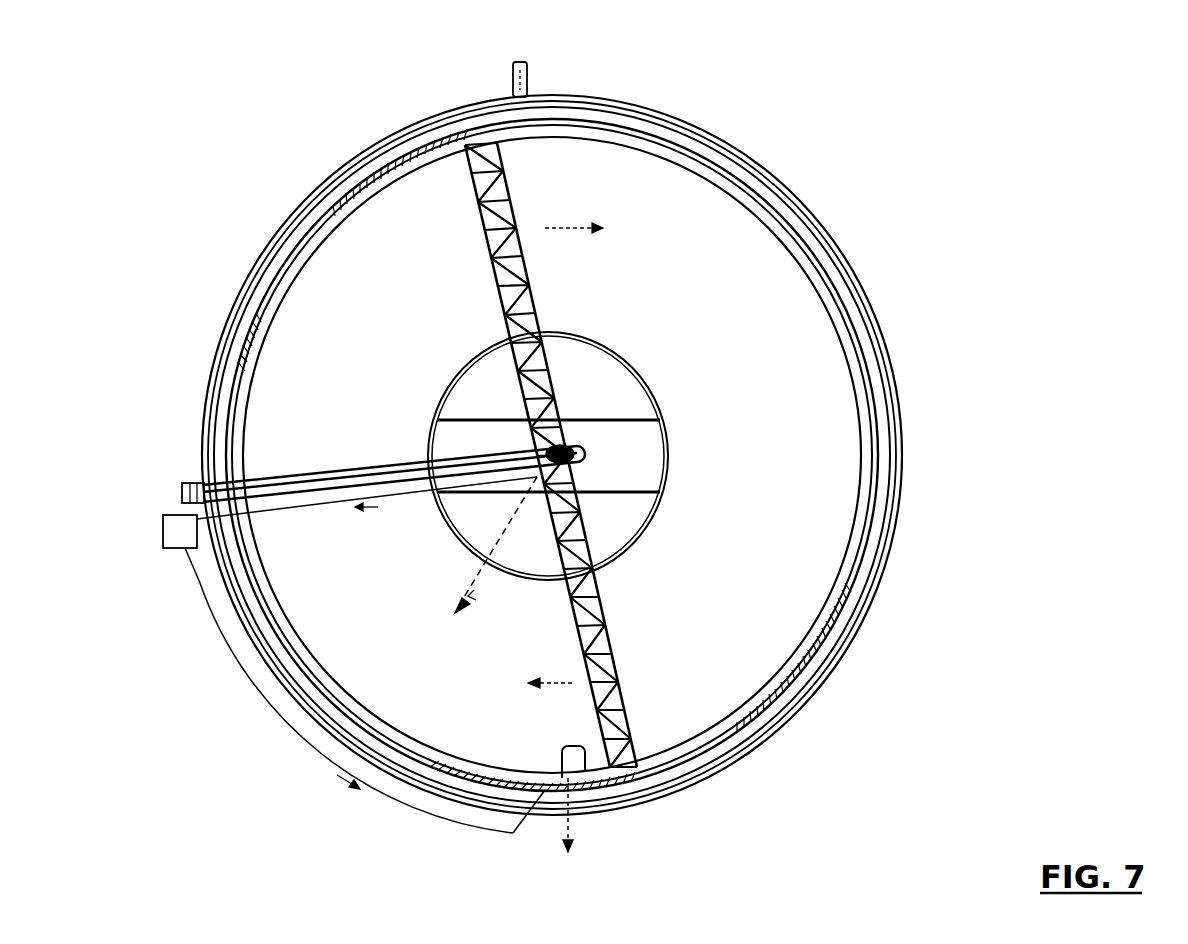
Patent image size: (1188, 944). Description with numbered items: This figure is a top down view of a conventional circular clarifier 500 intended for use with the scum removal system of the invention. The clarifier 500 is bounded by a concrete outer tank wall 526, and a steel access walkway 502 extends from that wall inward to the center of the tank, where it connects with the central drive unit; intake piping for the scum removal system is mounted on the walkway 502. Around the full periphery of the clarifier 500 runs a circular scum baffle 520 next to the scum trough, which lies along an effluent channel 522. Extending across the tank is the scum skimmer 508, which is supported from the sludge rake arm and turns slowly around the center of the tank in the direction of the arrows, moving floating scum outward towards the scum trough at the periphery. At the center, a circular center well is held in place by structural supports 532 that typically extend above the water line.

The circular clarifier 500 is at (589, 438).
The walkway 502 is at (374, 492).
The scum skimmer 508 is at (551, 455).
The circular scum baffle 520 is at (385, 700).
The effluent channel 522 is at (605, 455).
The concrete outer tank wall 526 is at (581, 455).
The structural supports 532 is at (581, 485).